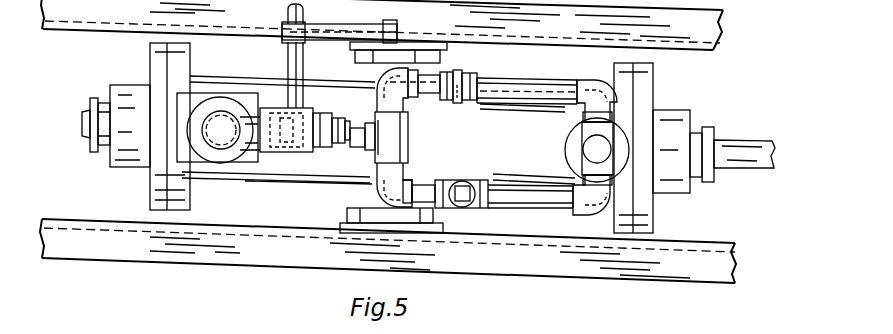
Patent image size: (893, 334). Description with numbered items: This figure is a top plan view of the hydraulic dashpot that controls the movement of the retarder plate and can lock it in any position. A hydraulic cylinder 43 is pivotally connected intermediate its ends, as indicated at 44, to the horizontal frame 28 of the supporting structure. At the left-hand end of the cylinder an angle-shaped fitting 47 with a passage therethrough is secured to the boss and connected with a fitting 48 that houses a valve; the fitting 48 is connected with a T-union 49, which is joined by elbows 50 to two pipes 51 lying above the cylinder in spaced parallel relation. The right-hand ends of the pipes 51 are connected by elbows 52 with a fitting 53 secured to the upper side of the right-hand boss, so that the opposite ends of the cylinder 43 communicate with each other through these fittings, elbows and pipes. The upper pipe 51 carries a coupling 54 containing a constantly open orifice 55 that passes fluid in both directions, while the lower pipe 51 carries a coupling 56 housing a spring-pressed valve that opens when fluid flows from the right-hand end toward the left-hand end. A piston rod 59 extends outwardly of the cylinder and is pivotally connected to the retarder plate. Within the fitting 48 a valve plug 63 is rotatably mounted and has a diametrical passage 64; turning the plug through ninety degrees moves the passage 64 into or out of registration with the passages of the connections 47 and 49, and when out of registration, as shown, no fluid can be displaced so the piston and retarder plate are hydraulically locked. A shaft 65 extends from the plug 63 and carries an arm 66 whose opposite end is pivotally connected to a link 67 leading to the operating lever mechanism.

The frame 28 is at (575, 271).
The hydraulic cylinder 43 is at (325, 183).
The pivotal connection 44 is at (398, 208).
The angle-shaped fitting 47 is at (225, 147).
The fitting 48 is at (270, 152).
The T-union 49 is at (406, 138).
The elbow 50 is at (383, 93).
The pipe 51 is at (532, 81).
The elbow 52 is at (601, 80).
The fitting 53 is at (622, 137).
The coupling 54 is at (472, 80).
The orifice 55 is at (462, 104).
The coupling 56 is at (480, 183).
The piston rod 59 is at (730, 143).
The valve plug 63 is at (269, 84).
The passage 64 is at (295, 183).
The shaft 65 is at (304, 84).
The arm 66 is at (341, 26).
The link 67 is at (246, 28).